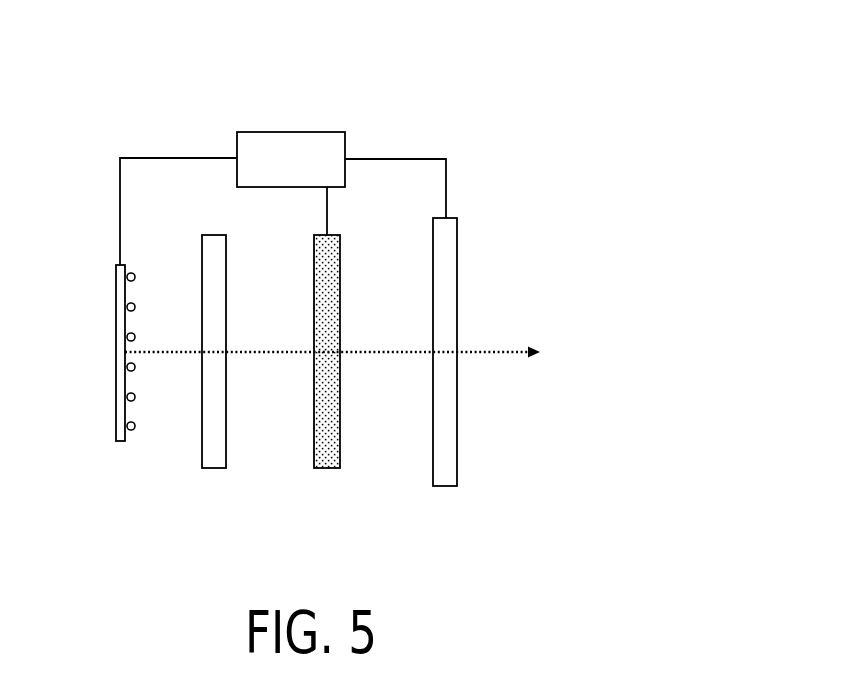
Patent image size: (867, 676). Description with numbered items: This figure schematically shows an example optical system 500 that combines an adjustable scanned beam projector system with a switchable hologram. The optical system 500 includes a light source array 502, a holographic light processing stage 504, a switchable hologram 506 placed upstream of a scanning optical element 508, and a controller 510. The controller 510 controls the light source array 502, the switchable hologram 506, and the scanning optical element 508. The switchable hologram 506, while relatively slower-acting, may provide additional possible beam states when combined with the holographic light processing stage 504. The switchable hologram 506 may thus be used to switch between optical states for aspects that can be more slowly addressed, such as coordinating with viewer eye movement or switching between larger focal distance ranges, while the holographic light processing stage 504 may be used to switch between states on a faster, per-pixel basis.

The optical system 500 is at (564, 86).
The light source array 502 is at (116, 318).
The holographic light processing stage 504 is at (227, 407).
The switchable hologram 506 is at (340, 435).
The scanning optical element 508 is at (457, 407).
The controller 510 is at (290, 132).